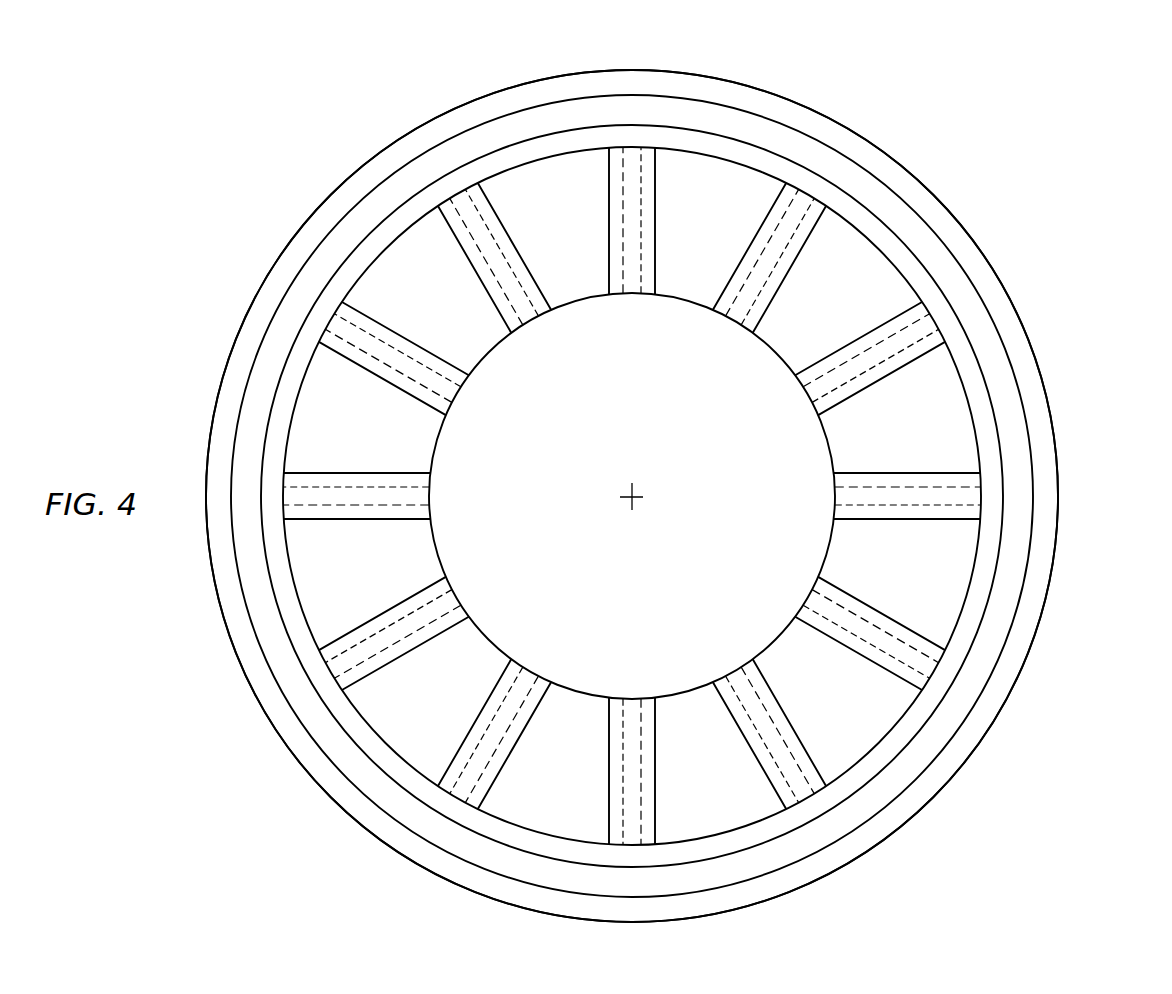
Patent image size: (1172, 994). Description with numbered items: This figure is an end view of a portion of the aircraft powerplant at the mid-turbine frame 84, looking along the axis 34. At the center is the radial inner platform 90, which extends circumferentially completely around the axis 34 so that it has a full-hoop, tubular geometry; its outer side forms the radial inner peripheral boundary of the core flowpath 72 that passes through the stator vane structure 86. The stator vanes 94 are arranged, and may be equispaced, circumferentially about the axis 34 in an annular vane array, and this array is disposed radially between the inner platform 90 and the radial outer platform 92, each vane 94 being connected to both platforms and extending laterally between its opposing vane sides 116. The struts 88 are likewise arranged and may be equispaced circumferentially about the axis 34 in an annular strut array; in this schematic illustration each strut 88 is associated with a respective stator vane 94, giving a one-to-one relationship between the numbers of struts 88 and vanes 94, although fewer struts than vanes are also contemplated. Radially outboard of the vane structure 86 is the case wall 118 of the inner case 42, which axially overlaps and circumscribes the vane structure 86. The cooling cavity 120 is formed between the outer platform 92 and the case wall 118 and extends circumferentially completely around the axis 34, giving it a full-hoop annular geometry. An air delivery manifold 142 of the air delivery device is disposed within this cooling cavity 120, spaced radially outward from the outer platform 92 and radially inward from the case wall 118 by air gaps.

The axis 34 is at (636, 500).
The inner case 42 is at (913, 168).
The core flowpath 72 is at (450, 308).
The mid-turbine frame 84 is at (900, 257).
The stator vane structure 86 is at (945, 323).
The struts 88 is at (640, 253).
The radial inner platform 90 is at (768, 360).
The radial outer platform 92 is at (898, 255).
The stator vanes 94 is at (606, 239).
The vane sides 116 is at (609, 175).
The case wall 118 is at (942, 200).
The cooling cavity 120 is at (762, 103).
The air delivery manifold 142 is at (1043, 403).